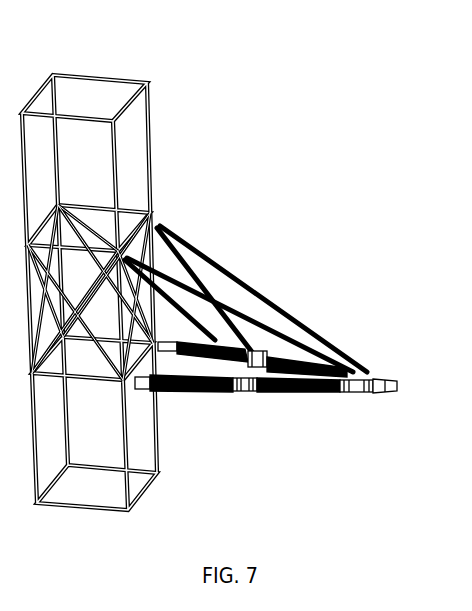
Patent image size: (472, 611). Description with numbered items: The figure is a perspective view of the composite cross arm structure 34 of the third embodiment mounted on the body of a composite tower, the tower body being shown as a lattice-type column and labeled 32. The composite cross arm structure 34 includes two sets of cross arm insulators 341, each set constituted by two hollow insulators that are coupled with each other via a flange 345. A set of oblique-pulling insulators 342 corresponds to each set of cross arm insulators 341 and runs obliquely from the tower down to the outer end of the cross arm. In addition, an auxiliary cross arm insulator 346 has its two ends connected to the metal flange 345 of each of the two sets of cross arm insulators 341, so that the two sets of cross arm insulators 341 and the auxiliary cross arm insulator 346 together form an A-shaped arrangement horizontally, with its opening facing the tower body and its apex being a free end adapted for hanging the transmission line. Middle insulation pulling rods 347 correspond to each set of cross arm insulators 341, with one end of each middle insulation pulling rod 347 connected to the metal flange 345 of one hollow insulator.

The tower 32 is at (130, 127).
The composite cross arm structure 34 is at (285, 340).
The cross arm insulators 341 is at (173, 390).
The oblique-pulling insulators 342 is at (298, 340).
The flange 345 is at (265, 393).
The auxiliary cross arm insulator 346 is at (250, 392).
The middle insulation pulling rods 347 is at (180, 308).